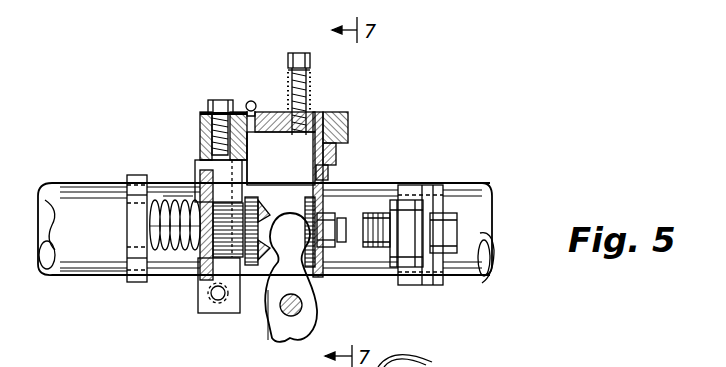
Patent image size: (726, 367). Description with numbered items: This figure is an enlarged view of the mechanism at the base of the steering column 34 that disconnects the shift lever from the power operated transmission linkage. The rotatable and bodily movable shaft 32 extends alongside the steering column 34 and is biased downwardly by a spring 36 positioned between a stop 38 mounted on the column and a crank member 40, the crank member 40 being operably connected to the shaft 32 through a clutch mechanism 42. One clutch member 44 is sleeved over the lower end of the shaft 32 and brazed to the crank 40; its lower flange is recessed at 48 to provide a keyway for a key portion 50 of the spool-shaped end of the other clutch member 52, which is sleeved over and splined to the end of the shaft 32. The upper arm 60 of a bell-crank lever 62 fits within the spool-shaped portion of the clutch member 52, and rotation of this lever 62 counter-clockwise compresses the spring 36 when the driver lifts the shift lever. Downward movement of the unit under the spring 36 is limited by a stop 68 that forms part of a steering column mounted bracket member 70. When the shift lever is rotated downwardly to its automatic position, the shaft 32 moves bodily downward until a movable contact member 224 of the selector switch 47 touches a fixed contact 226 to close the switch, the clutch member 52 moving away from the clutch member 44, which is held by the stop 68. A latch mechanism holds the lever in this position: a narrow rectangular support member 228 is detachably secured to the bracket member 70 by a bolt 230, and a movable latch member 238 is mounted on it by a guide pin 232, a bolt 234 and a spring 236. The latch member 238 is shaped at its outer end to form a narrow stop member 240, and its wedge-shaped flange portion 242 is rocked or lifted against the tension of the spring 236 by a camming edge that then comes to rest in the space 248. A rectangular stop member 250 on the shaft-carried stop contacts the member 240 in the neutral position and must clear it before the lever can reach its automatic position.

The shaft 32 is at (88, 213).
The steering column 34 is at (483, 190).
The spring 36 is at (173, 258).
The stop 38 is at (132, 178).
The crank member 40 is at (200, 177).
The clutch mechanism 42 is at (262, 283).
The clutch member 44 is at (200, 280).
The selector switch 47 is at (362, 233).
The recess 48 is at (313, 143).
The key portion 50 is at (265, 228).
The clutch member 52 is at (268, 292).
The upper arm 60 is at (310, 292).
The bell-crank lever 62 is at (315, 312).
The stop 68 is at (242, 157).
The bracket member 70 is at (200, 135).
The movable contact member 224 is at (347, 228).
The fixed contact 226 is at (400, 190).
The support member 228 is at (200, 116).
The bolt 230 is at (205, 104).
The guide pin 232 is at (249, 101).
The bolt 234 is at (288, 80).
The spring 236 is at (289, 68).
The movable latch member 238 is at (308, 110).
The stop member 240 is at (348, 116).
The wedge-shaped flange portion 242 is at (315, 112).
The space 248 is at (348, 140).
The stop member 250 is at (330, 168).